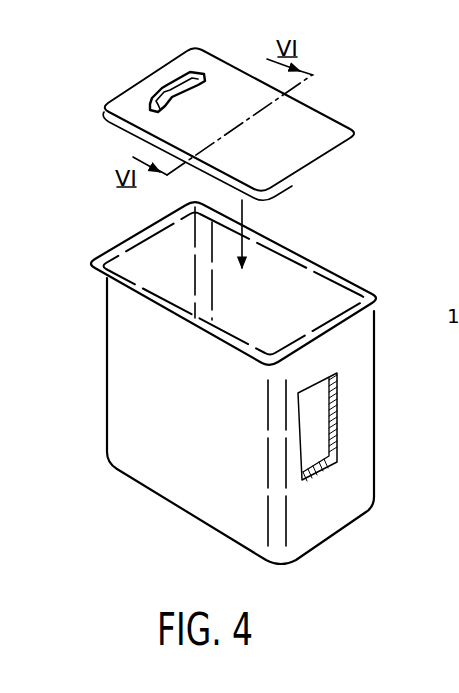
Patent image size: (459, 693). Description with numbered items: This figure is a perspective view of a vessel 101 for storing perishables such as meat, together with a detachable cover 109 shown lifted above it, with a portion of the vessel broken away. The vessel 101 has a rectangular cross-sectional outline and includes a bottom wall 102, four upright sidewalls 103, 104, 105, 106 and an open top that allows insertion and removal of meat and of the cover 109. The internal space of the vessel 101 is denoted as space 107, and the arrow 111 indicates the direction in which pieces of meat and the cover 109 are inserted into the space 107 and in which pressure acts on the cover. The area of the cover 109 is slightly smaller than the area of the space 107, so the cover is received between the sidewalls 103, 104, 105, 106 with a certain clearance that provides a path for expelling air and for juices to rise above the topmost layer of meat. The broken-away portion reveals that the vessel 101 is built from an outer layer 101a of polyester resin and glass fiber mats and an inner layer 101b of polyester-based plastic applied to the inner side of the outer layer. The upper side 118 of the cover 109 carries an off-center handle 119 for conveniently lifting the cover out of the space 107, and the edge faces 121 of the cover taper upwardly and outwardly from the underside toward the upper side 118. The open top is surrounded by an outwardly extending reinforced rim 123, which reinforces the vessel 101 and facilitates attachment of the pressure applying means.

The vessel 101 is at (369, 551).
The outer layer 101a is at (338, 382).
The inner layer 101b is at (318, 455).
The bottom wall 102 is at (180, 517).
The sidewall 103 is at (125, 398).
The sidewall 104 is at (138, 260).
The sidewall 105 is at (340, 300).
The sidewall 106 is at (344, 450).
The internal space 107 is at (313, 294).
The cover 109 is at (312, 125).
The arrow 111 is at (250, 248).
The upper side 118 is at (223, 91).
The handle 119 is at (172, 88).
The edge faces 121 is at (126, 131).
The rim 123 is at (300, 246).